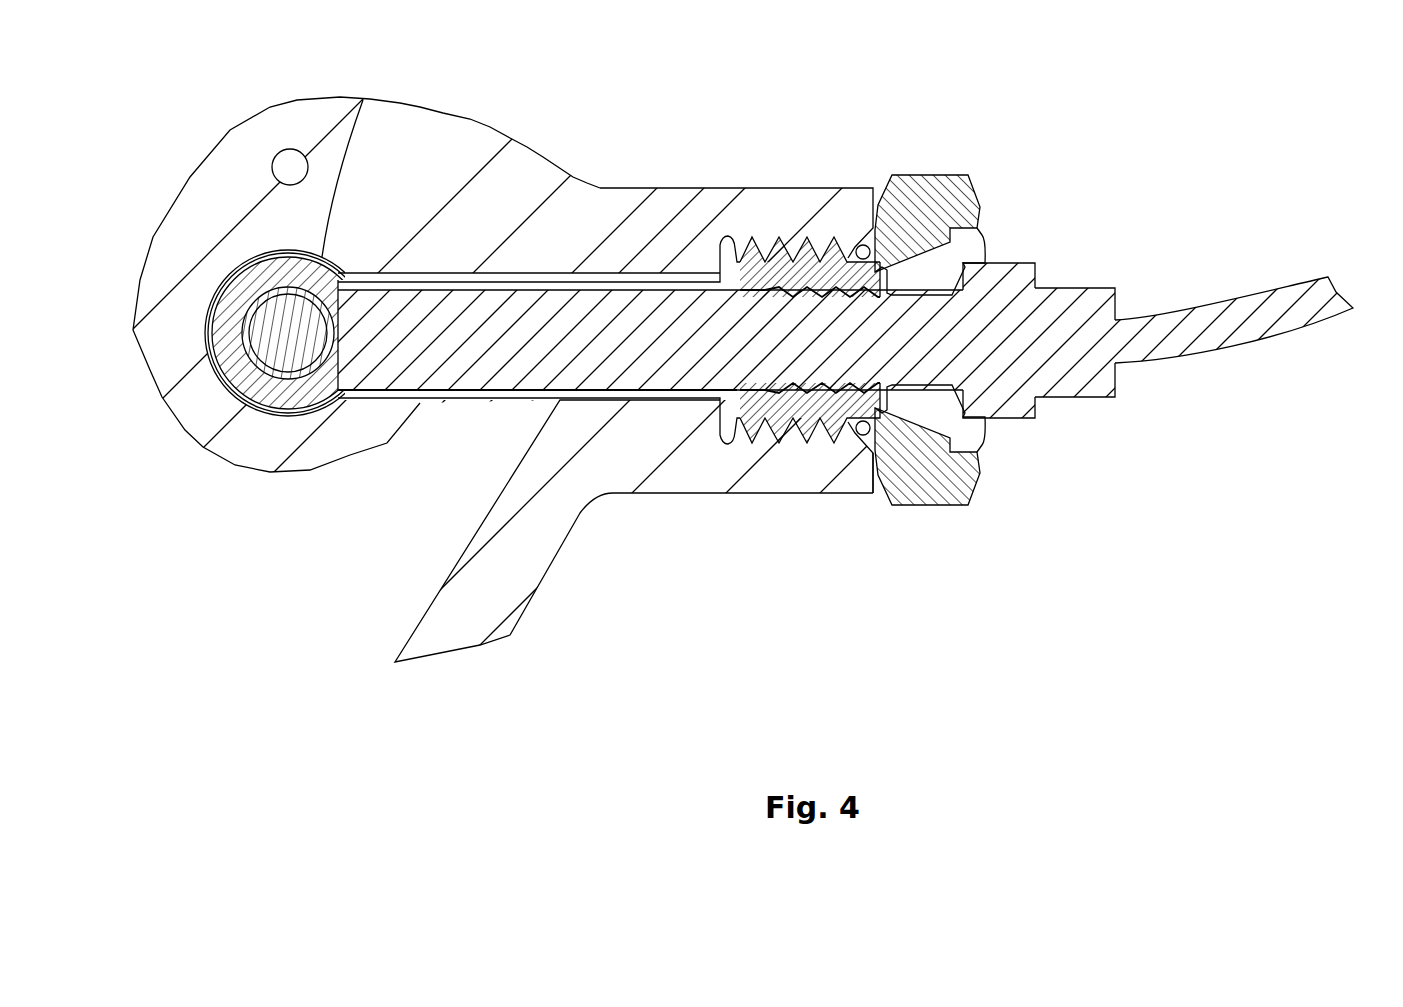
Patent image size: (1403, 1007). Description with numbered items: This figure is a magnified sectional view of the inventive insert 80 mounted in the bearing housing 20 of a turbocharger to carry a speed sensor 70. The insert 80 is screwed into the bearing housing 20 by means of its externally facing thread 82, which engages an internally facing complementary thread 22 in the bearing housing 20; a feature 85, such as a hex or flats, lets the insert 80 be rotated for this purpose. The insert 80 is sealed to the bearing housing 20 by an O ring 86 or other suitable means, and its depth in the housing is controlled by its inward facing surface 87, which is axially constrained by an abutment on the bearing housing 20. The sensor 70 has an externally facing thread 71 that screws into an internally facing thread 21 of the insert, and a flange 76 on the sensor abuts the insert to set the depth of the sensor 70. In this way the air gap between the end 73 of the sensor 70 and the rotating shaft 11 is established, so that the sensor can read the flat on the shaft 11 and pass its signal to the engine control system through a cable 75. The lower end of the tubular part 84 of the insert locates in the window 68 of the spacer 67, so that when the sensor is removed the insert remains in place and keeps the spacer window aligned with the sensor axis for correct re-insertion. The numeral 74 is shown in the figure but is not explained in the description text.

The shaft 11 is at (282, 415).
The bearing housing 20 is at (507, 190).
The internally facing thread 21 is at (800, 393).
The internally facing complementary thread 22 is at (754, 228).
The spacer 67 is at (210, 397).
The window 68 is at (305, 253).
The speed sensor 70 is at (967, 347).
The externally facing thread 71 is at (822, 368).
The end of the sensor 73 is at (352, 338).
The hex section 74 is at (1002, 255).
The cable 75 is at (1255, 335).
The flange 76 is at (905, 405).
The insert 80 is at (946, 450).
The externally facing thread 82 is at (756, 300).
The tubular part 84 is at (442, 400).
The feature 85 is at (922, 160).
The O ring 86 is at (880, 238).
The inward facing surface 87 is at (965, 420).